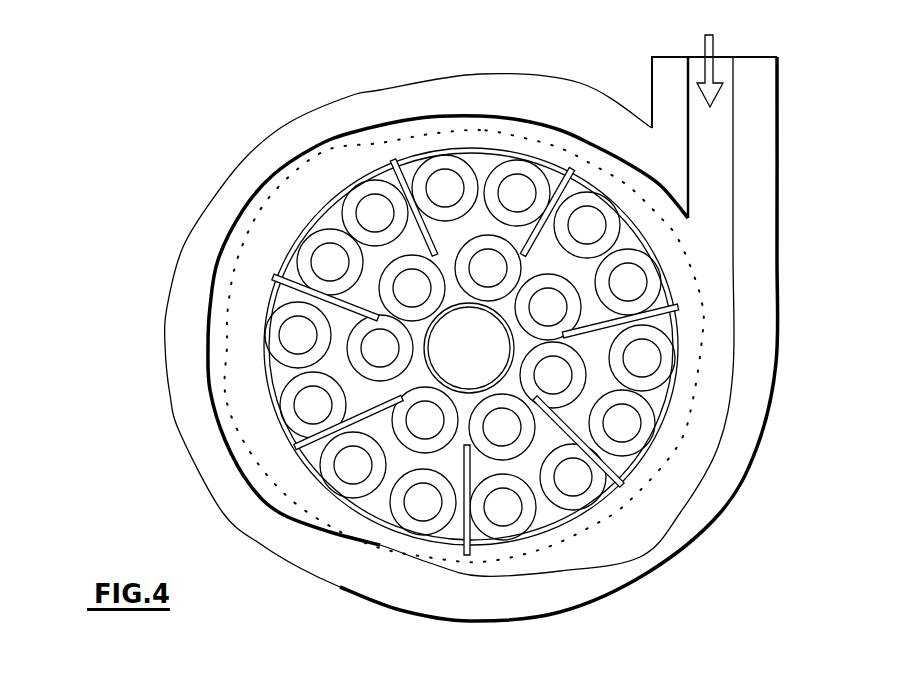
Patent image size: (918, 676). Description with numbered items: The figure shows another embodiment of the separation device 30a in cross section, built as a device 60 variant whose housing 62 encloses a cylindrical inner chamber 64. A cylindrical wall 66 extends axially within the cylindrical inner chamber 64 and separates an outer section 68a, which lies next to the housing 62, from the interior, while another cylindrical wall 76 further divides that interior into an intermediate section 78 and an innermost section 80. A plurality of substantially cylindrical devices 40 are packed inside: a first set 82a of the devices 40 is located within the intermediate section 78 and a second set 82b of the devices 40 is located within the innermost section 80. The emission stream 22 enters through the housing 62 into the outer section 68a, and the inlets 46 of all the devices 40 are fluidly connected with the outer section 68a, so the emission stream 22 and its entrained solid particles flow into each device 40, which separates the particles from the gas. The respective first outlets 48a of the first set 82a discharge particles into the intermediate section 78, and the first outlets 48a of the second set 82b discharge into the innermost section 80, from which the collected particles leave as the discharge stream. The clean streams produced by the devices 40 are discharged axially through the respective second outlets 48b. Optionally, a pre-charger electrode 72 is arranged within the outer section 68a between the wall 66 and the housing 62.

The emission stream 22 is at (718, 42).
The separation device 30a is at (92, 440).
The device 40 is at (278, 257).
The inlet 46 is at (403, 160).
The first outlet 48a is at (447, 157).
The second outlet 48b is at (383, 190).
The device 60 is at (172, 444).
The housing 62 is at (292, 122).
The cylindrical inner chamber 64 is at (543, 131).
The cylindrical wall 66 is at (640, 460).
The outer section 68a is at (482, 565).
The pre-charger electrode 72 is at (700, 310).
The cylindrical wall 76 is at (415, 470).
The intermediate section 78 is at (553, 527).
The innermost section 80 is at (614, 543).
The first set 82a is at (300, 460).
The second set 82b is at (432, 478).